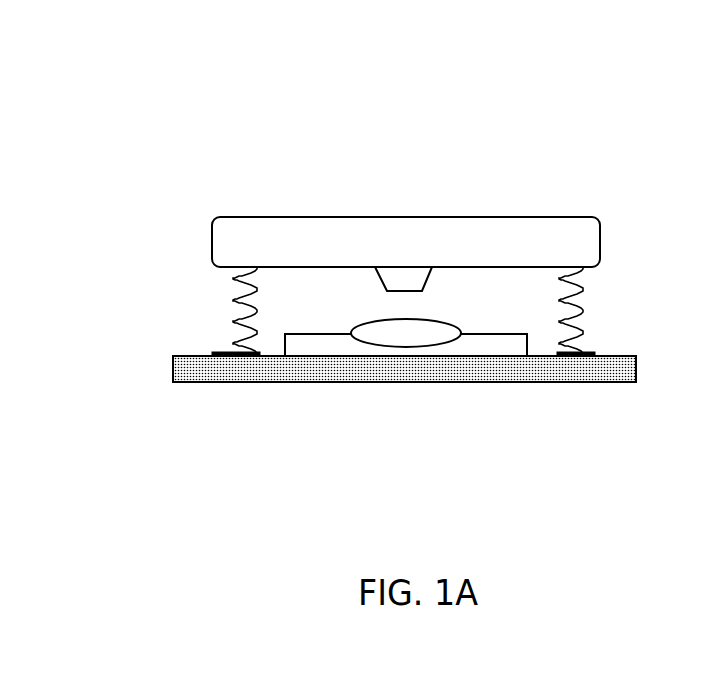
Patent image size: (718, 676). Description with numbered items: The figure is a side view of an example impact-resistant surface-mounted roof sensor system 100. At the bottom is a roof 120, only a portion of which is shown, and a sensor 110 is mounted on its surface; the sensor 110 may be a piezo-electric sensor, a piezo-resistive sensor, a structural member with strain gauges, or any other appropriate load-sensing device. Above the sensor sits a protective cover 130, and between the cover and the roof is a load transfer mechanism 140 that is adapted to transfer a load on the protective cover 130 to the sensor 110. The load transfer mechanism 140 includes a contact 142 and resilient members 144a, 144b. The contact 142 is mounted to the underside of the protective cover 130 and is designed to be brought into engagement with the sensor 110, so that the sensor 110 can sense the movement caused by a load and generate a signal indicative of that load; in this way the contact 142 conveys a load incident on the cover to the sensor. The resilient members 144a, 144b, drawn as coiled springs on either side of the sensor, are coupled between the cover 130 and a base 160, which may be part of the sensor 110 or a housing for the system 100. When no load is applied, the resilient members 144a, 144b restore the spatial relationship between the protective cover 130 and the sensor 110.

The impact-resistant roof sensor system 100 is at (234, 99).
The sensor 110 is at (445, 346).
The roof 120 is at (405, 382).
The protective cover 130 is at (407, 217).
The load transfer mechanism 140 is at (202, 277).
The contact 142 is at (382, 284).
The resilient member 144a is at (240, 297).
The resilient member 144b is at (577, 274).
The base 160 is at (594, 356).